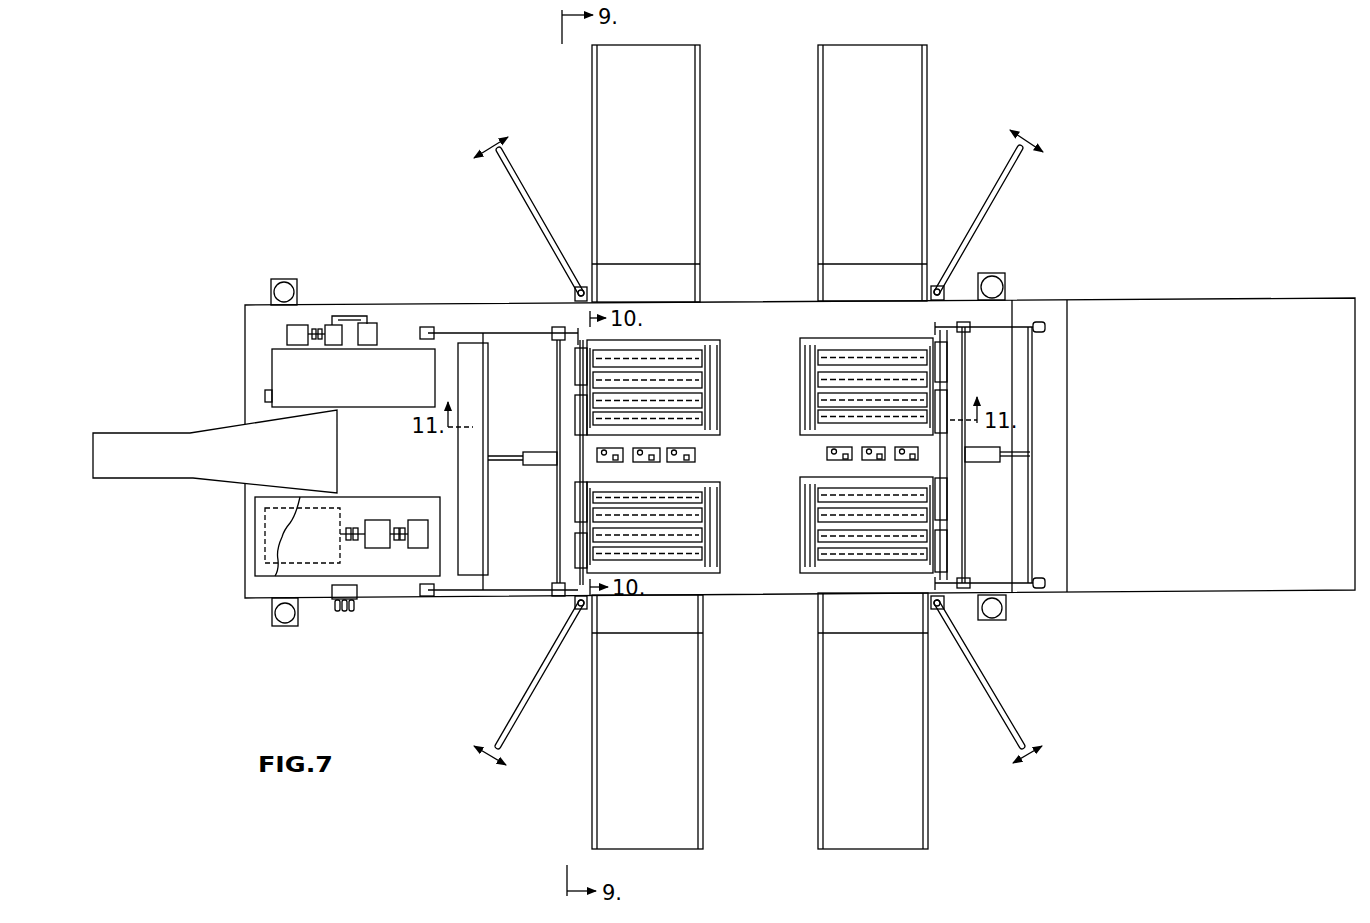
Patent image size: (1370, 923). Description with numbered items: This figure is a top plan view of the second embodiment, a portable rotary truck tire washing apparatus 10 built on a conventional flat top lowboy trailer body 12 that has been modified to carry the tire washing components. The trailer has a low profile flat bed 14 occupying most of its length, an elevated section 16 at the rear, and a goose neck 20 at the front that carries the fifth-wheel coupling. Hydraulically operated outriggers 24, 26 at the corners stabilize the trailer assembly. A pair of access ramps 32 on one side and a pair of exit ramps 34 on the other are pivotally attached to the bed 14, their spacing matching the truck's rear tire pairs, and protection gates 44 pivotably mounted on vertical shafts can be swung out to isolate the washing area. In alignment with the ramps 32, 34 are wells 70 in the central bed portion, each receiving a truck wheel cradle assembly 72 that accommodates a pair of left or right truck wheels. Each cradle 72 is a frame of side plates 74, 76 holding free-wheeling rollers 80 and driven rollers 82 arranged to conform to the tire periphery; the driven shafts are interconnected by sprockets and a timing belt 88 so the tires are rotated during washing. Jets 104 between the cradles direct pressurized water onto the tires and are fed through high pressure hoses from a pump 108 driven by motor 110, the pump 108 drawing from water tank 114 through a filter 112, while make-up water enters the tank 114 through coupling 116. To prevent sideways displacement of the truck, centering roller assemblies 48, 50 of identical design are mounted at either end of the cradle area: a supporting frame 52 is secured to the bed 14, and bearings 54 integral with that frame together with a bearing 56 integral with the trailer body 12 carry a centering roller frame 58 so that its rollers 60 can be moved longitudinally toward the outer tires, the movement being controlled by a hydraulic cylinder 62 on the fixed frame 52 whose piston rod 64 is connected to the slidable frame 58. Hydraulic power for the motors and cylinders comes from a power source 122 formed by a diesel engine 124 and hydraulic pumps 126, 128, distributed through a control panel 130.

The rotary truck tire washing apparatus 10 is at (1166, 621).
The flat top trailer body 12 is at (1154, 311).
The flat bed 14 is at (776, 600).
The elevated section 16 is at (1205, 582).
The goose neck 20 is at (197, 463).
The hydraulically operated outrigger 24 is at (286, 279).
The hydraulically operated outrigger 26 is at (1006, 288).
The access ramps 32 is at (830, 77).
The exit ramps 34 is at (830, 720).
The protection gates 44 is at (548, 181).
The centering roller assembly 48 is at (571, 508).
The centering roller assembly 50 is at (950, 505).
The supporting frame 52 is at (966, 386).
The bearings 54 is at (968, 332).
The bearing 56 is at (1045, 330).
The centering roller frame 58 is at (1034, 398).
The rollers 60 is at (575, 380).
The hydraulic cylinder 62 is at (990, 462).
The piston rod 64 is at (1016, 453).
The wells 70 is at (713, 428).
The truck wheel cradle assembly 72 is at (810, 368).
The side plate 74 is at (575, 349).
The side plate 76 is at (706, 352).
The free-wheeling rollers 80 is at (649, 357).
The rollers 82 is at (580, 410).
The timing belt 88 is at (344, 605).
The jets 104 is at (648, 459).
The pump 108 is at (332, 321).
The motor 110 is at (287, 333).
The filter 112 is at (375, 330).
The water tank 114 is at (368, 388).
The coupling 116 is at (265, 396).
The power source 122 is at (368, 497).
The diesel engine 124 is at (292, 533).
The hydraulic pump 126 is at (378, 548).
The hydraulic pump 128 is at (420, 548).
The control panel 130 is at (331, 600).